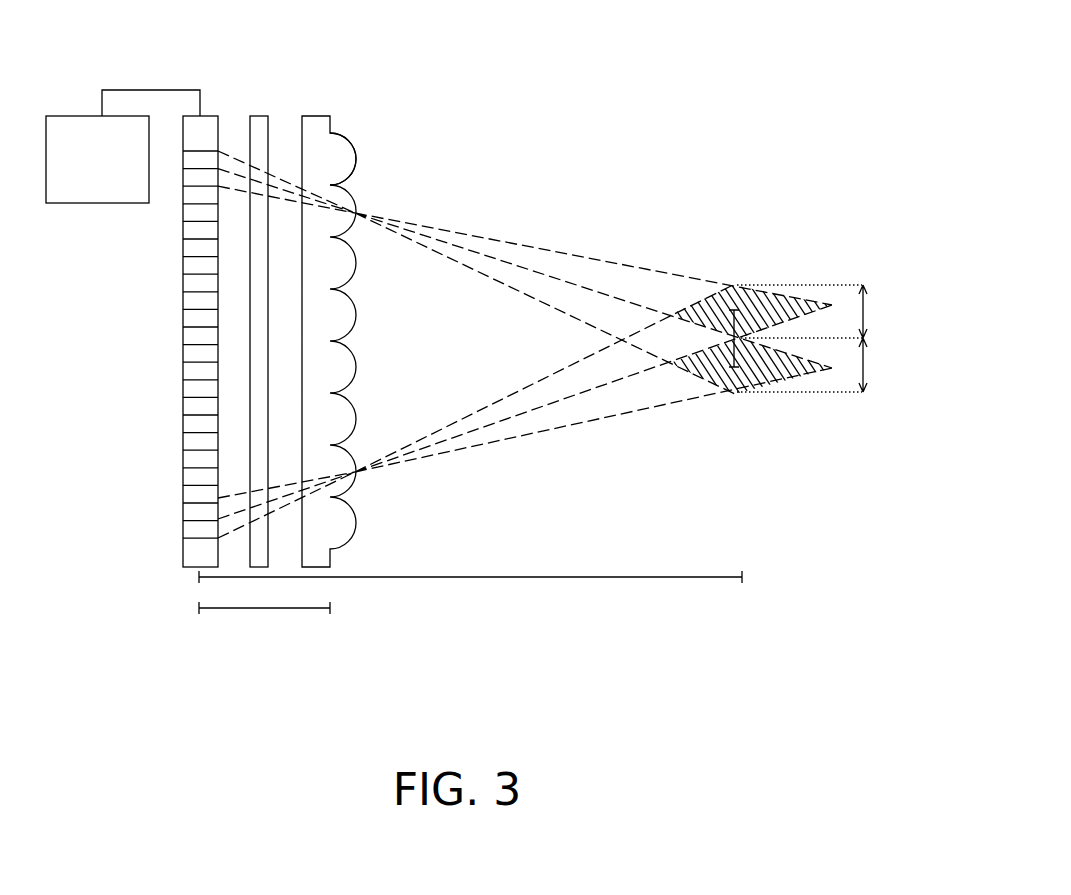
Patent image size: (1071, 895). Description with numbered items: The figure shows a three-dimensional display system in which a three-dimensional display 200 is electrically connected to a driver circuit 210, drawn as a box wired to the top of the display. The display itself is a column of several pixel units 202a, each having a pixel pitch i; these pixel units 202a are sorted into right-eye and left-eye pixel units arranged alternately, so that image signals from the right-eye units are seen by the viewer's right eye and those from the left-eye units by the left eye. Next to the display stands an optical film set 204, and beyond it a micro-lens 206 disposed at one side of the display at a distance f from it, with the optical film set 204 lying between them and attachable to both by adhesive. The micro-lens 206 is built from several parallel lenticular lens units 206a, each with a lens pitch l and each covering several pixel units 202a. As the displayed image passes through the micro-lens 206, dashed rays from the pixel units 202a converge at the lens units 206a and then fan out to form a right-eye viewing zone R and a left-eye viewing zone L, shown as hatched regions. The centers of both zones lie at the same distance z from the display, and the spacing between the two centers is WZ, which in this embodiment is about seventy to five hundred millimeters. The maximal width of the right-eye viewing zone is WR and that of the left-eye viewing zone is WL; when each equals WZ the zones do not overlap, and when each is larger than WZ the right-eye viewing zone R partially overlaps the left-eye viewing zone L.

The three-dimensional display 200 is at (649, 96).
The pixel unit 202a is at (188, 509).
The optical film set 204 is at (257, 123).
The micro-lens 206 is at (318, 123).
The lens unit 206a is at (346, 160).
The driver circuit 210 is at (68, 116).
The right-eye viewing zone R is at (764, 300).
The left-eye viewing zone L is at (751, 383).
The distance between viewing zone centers WZ is at (737, 342).
The maximal width of right-eye viewing zone WR is at (876, 311).
The maximal width of left-eye viewing zone WL is at (875, 365).
The pixel pitch i is at (175, 406).
The lens pitch l is at (367, 315).
The distance between viewing zone center and display z is at (470, 588).
The distance between display and micro-lens f is at (264, 622).